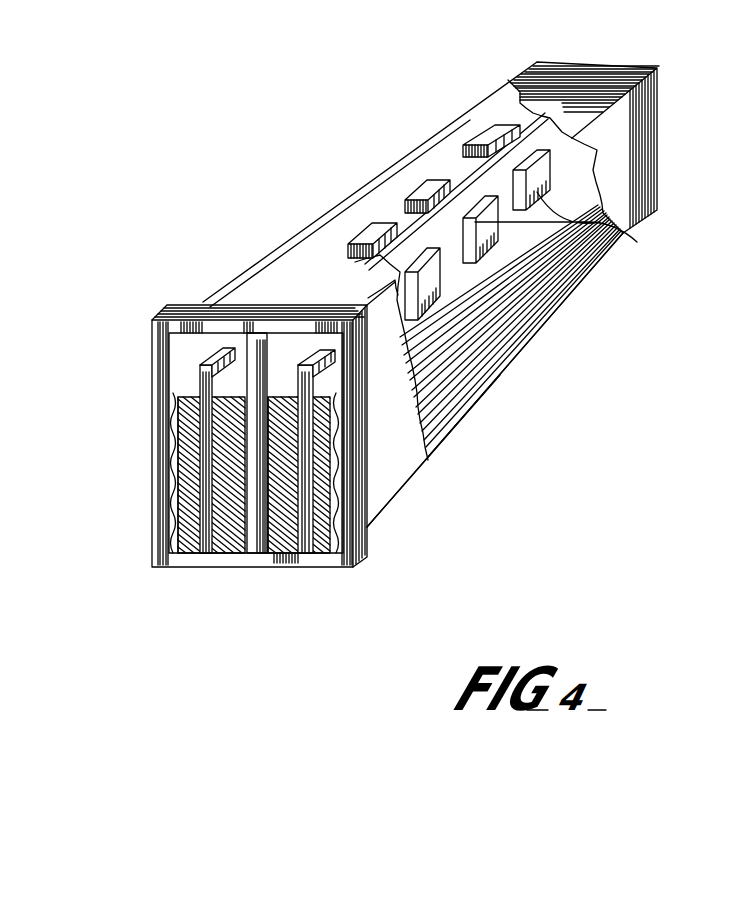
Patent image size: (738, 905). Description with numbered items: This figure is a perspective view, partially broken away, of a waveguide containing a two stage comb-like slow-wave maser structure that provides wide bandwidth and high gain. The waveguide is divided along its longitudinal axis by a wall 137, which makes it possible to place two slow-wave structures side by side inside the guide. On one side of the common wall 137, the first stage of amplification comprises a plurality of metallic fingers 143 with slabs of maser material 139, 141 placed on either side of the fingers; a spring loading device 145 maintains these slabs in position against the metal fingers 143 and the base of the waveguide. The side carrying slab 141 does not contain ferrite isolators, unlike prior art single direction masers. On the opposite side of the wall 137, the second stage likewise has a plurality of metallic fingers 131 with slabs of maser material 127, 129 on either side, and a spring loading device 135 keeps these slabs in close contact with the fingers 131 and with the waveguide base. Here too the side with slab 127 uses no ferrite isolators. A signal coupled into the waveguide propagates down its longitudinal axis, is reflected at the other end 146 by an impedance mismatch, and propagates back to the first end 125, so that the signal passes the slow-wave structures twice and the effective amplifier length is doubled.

The first end 125 is at (377, 560).
The slab of maser material 127 is at (185, 545).
The slab of maser material 129 is at (243, 305).
The metallic fingers 131 is at (490, 136).
The spring loading device 135 is at (173, 408).
The wall 137 is at (265, 337).
The slab of maser material 139 is at (283, 540).
The slab of maser material 141 is at (307, 610).
The metallic fingers 143 is at (372, 262).
The spring loading device 145 is at (340, 470).
The other end 146 is at (640, 98).